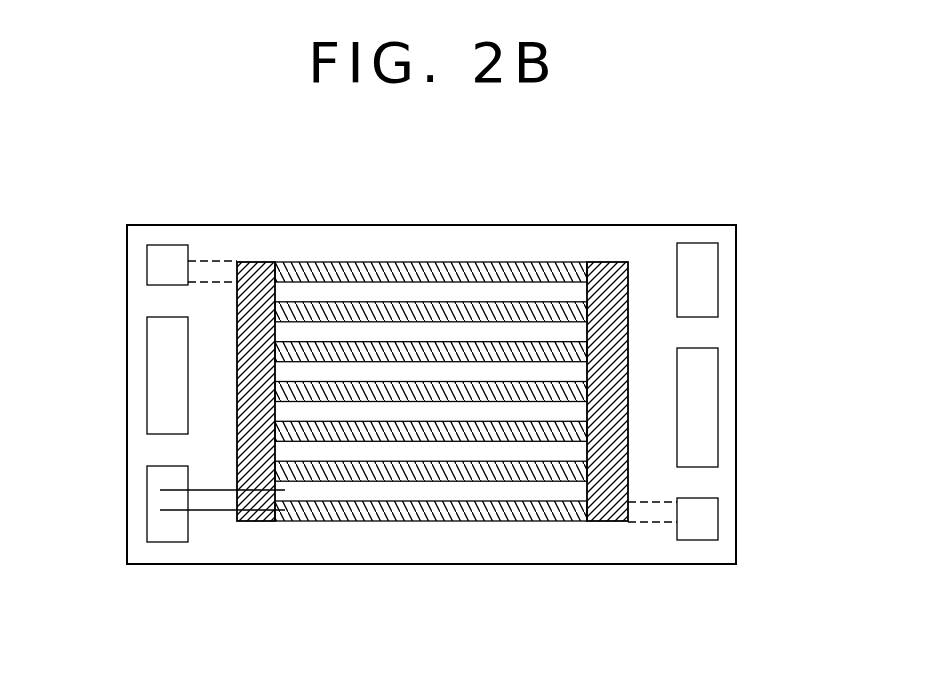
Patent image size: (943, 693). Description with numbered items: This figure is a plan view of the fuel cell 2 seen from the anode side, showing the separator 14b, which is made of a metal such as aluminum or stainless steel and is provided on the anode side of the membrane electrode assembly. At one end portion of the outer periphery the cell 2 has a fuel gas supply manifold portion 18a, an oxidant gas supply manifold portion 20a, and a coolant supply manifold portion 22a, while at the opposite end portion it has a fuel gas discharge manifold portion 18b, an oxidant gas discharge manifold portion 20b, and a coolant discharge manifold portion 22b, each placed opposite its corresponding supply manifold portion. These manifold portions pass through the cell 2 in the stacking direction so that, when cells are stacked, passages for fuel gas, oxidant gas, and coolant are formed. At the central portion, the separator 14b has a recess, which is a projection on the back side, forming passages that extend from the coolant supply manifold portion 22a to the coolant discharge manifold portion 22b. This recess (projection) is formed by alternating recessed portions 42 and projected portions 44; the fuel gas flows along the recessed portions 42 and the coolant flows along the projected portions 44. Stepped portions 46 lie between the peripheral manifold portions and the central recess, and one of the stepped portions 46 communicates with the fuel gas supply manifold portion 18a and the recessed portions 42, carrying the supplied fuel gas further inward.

The cell 2 is at (431, 385).
The separator 14b is at (334, 547).
The fuel gas supply manifold portion 18a is at (158, 259).
The fuel gas discharge manifold portion 18b is at (707, 525).
The oxidant gas supply manifold portion 20a is at (167, 532).
The oxidant gas discharge manifold portion 20b is at (703, 277).
The coolant supply manifold portion 22a is at (158, 388).
The coolant discharge manifold portion 22b is at (703, 430).
The recessed portions 42 is at (307, 263).
The projected portions 44 is at (394, 292).
The stepped portions 46 is at (611, 500).